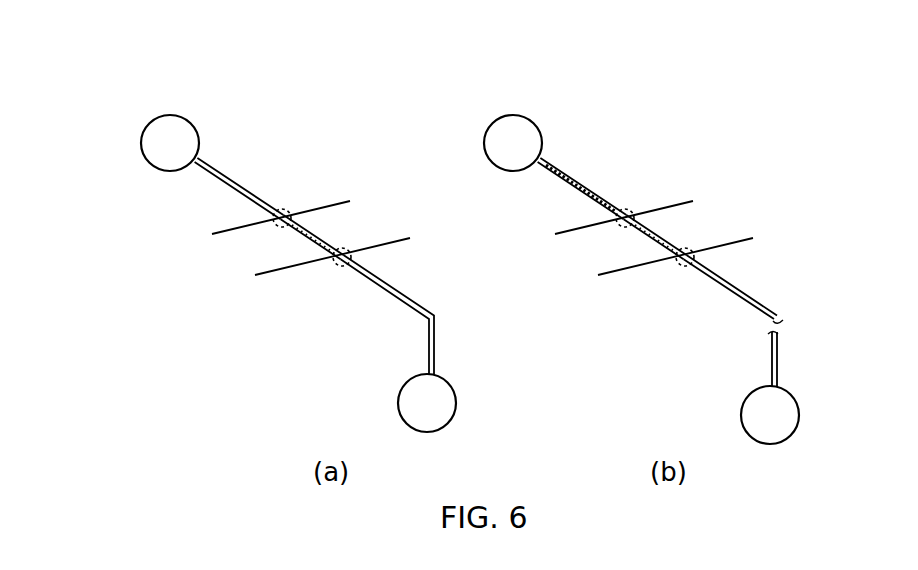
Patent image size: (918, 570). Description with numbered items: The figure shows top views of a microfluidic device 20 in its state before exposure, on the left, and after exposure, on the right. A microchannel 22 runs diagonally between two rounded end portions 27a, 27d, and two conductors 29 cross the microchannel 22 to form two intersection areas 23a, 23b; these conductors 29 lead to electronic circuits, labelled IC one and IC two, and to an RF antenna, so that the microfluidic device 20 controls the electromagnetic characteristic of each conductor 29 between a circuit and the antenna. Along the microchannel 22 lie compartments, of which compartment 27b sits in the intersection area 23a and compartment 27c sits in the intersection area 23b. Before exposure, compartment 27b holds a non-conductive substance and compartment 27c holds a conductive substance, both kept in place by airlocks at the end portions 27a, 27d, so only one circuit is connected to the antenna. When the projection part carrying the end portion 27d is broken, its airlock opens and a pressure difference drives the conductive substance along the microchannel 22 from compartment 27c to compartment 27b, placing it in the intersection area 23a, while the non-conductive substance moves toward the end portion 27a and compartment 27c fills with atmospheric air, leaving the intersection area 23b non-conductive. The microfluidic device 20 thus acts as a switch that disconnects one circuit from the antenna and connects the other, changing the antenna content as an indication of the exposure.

The microfluidic device 20 is at (313, 120).
The microchannel 22 is at (127, 141).
The intersection area 23a is at (282, 204).
The intersection area 23b is at (341, 274).
The end portion 27a is at (176, 114).
The compartment 27b is at (235, 192).
The compartment 27c is at (332, 247).
The end portion 27d is at (418, 318).
The conductors 29 is at (320, 203).